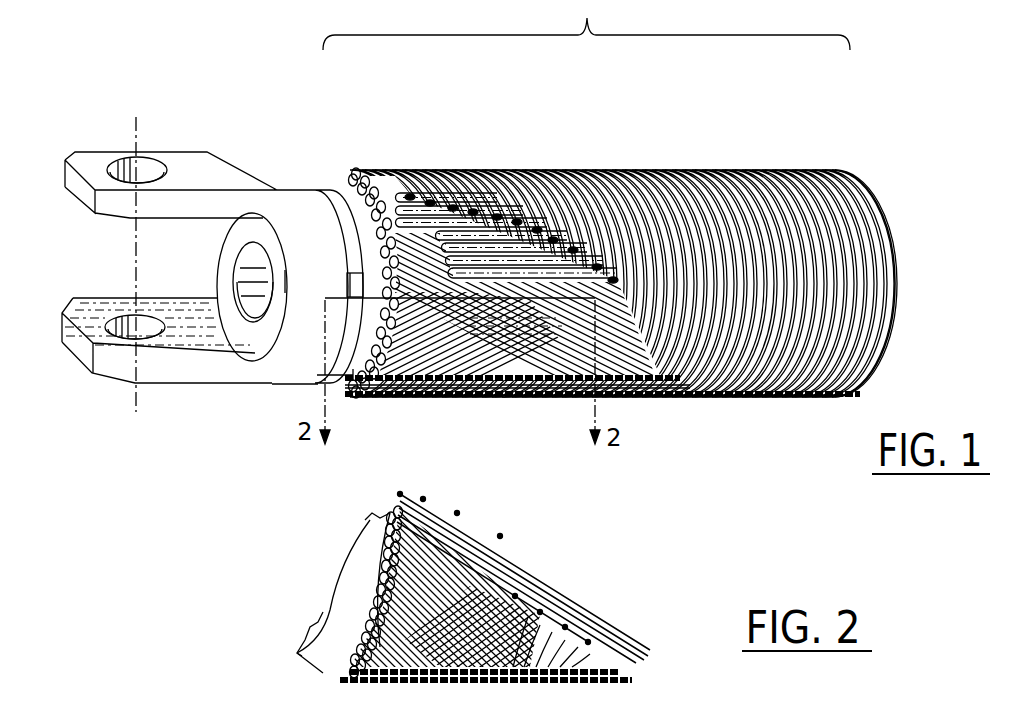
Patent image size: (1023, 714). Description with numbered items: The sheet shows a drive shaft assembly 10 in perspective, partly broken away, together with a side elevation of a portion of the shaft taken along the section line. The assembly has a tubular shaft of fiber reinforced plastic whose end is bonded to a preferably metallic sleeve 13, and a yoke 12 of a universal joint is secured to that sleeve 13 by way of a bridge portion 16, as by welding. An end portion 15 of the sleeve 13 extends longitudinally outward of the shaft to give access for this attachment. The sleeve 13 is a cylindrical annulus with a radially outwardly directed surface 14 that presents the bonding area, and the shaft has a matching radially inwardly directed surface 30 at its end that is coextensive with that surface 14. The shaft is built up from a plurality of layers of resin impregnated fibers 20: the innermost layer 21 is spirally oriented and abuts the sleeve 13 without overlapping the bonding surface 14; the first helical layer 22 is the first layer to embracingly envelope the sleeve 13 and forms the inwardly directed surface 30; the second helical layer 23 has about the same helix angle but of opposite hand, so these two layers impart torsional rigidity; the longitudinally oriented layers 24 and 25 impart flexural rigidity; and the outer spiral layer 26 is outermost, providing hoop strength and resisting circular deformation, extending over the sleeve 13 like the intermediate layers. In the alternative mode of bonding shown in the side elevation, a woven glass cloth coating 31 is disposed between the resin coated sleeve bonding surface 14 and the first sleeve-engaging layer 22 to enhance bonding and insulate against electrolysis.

In FIG. 1, the drive shaft assembly 10 is at (245, 495).
In FIG. 1, the yoke 12 is at (199, 161).
In FIG. 1, the sleeve 13 is at (348, 384).
In FIG. 1, the radially outwardly directed surface 14 is at (502, 348).
In FIG. 1, the end portion 15 is at (352, 197).
In FIG. 1, the bridge portion 16 is at (303, 200).
In FIG. 1, the resin impregnated fibers 20 is at (536, 350).
In FIG. 1, the innermost layer 21 is at (565, 358).
In FIG. 2, the innermost layer 21 is at (573, 593).
In FIG. 1, the first helical layer 22 is at (412, 374).
In FIG. 2, the first helical layer 22 is at (457, 570).
In FIG. 1, the second helical layer 23 is at (627, 350).
In FIG. 2, the second helical layer 23 is at (423, 627).
In FIG. 1, the longitudinally oriented layer 24 is at (418, 220).
In FIG. 1, the longitudinally oriented layer 25 is at (477, 232).
In FIG. 1, the outer spiral layer 26 is at (562, 185).
In FIG. 1, the radially inwardly directed surface 30 is at (445, 352).
In FIG. 2, the cloth coating 31 is at (480, 637).